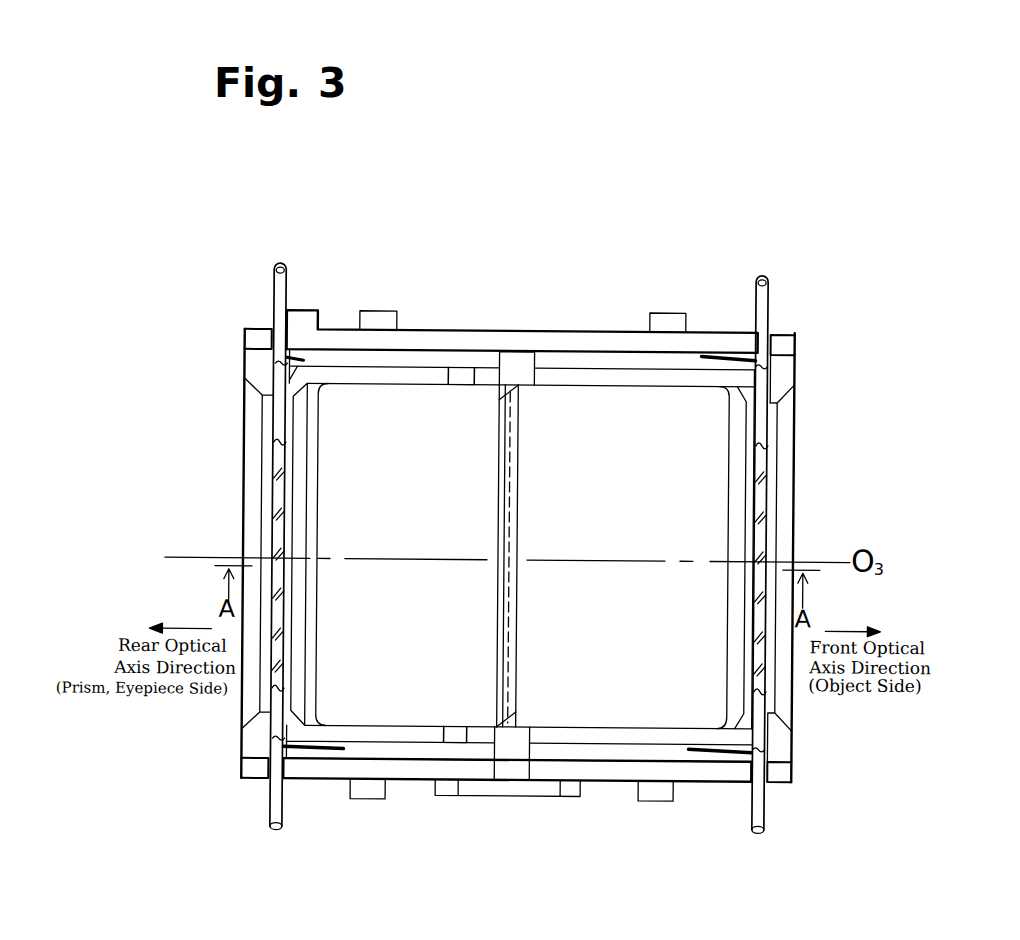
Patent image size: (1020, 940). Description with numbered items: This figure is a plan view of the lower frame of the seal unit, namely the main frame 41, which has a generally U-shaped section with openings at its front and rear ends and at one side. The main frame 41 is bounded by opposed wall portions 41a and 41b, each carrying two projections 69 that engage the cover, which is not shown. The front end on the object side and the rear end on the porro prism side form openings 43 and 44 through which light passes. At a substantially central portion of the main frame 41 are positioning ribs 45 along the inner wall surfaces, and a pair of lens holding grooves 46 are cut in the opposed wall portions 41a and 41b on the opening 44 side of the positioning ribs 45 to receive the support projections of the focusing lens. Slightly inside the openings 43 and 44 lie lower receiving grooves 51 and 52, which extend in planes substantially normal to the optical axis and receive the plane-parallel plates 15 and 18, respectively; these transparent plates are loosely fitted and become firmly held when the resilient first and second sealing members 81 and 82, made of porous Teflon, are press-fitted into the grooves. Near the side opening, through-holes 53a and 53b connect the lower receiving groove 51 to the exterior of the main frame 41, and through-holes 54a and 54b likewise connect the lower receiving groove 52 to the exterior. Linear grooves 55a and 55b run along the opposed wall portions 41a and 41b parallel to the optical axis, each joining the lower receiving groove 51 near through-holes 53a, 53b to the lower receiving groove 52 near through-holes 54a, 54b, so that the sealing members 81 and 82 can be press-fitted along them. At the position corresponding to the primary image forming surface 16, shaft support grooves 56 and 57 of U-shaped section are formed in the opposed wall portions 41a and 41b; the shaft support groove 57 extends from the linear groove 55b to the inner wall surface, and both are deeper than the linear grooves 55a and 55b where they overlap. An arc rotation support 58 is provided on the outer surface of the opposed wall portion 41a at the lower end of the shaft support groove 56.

The plane-parallel plate 15 is at (765, 483).
The primary image forming surface 16 is at (508, 497).
The plane-parallel plate 18 is at (277, 508).
The main frame 41 is at (606, 320).
The opposed wall portion 41a is at (320, 768).
The opposed wall portion 41b is at (334, 340).
The opening 43 is at (778, 400).
The opening 44 is at (258, 398).
The positioning rib 45 is at (518, 390).
The lens holding groove 46 is at (463, 376).
The lower receiving groove 51 is at (781, 368).
The lower receiving groove 52 is at (272, 370).
The through-hole 53a is at (775, 782).
The through-hole 53b is at (773, 345).
The through-hole 54a is at (263, 763).
The through-hole 54b is at (266, 343).
The linear groove 55a is at (425, 755).
The linear groove 55b is at (466, 363).
The shaft support groove 56 is at (525, 762).
The shaft support groove 57 is at (521, 358).
The arc rotation support 58 is at (486, 798).
The projection 69 is at (386, 322).
The first sealing member 81 is at (279, 285).
The second sealing member 82 is at (276, 443).